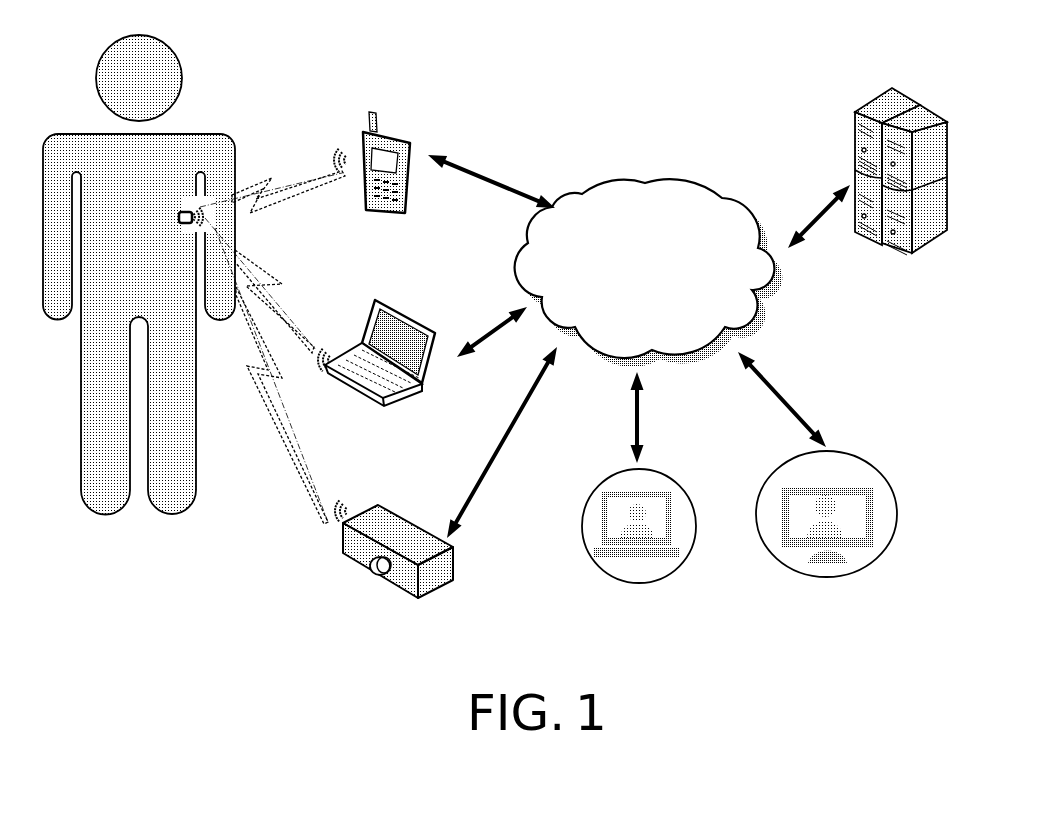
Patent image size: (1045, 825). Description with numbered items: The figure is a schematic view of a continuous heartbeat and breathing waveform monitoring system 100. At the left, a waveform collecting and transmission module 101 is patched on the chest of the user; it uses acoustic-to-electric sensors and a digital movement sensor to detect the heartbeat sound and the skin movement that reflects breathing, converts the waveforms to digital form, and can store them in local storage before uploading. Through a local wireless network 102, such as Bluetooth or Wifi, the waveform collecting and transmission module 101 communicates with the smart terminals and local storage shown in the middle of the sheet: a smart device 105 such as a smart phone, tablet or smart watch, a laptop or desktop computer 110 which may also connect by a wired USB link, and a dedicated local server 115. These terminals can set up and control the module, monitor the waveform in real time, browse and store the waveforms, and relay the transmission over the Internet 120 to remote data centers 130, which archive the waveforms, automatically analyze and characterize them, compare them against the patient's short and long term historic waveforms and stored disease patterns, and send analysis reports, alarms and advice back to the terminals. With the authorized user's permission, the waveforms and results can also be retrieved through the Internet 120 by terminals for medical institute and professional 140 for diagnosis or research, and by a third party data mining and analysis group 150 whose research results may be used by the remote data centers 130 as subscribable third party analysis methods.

The continuous heartbeat and breathing waveform monitoring system 100 is at (88, 30).
The waveform collecting and transmission module 101 is at (176, 212).
The local wireless network 102 is at (268, 290).
The smart device 105 is at (412, 133).
The laptop or desktop computer 110 is at (405, 312).
The dedicated local server 115 is at (400, 517).
The Internet 120 is at (655, 165).
The remote data centers 130 is at (855, 140).
The terminals for medical institute and professional 140 is at (633, 583).
The third party data mining and analysis group 150 is at (829, 578).